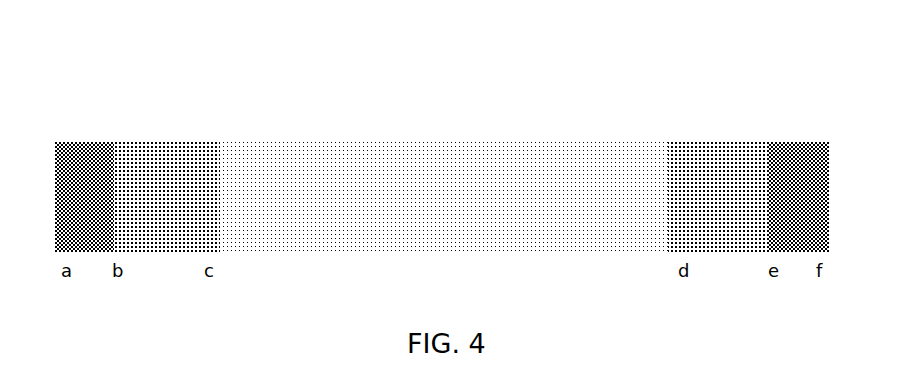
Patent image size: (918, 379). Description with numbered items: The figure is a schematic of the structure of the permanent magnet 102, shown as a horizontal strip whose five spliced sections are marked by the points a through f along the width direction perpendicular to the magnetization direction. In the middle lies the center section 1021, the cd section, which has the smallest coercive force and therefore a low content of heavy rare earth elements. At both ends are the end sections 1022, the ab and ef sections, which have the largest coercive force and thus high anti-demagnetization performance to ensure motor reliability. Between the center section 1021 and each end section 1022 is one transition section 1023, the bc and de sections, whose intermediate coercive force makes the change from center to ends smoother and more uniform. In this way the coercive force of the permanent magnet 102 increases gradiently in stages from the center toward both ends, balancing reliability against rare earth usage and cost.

The permanent magnet 102 is at (449, 128).
The center section 1021 is at (467, 167).
The end section 1022 is at (72, 163).
The transition section 1023 is at (162, 172).